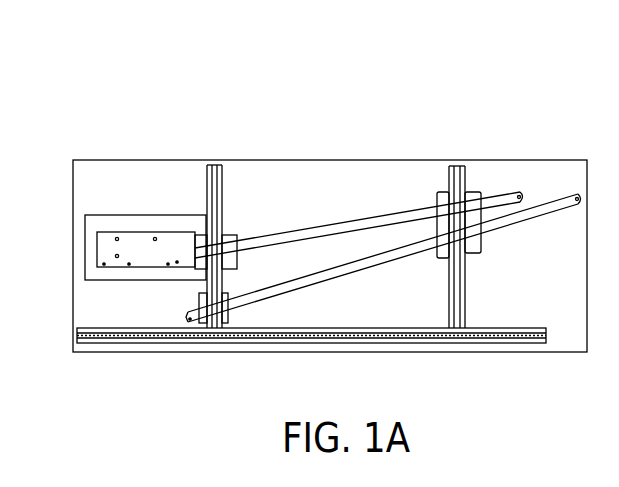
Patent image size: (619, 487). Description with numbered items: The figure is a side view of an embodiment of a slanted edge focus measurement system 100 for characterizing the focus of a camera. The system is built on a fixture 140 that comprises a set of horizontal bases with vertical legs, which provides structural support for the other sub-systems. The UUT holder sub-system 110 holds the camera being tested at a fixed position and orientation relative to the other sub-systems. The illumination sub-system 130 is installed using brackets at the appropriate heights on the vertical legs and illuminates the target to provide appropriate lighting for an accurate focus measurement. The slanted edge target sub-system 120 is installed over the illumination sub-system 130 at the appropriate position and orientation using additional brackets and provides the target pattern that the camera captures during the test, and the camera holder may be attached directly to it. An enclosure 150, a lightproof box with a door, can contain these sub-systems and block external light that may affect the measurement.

The measurement system 100 is at (79, 42).
The unit under test (UUT) holder sub-system 110 is at (125, 215).
The slanted edge target sub-system 120 is at (344, 222).
The illumination sub-system 130 is at (397, 250).
The fixture/enclosure sub-system 140 is at (466, 290).
The enclosure 150 is at (550, 352).